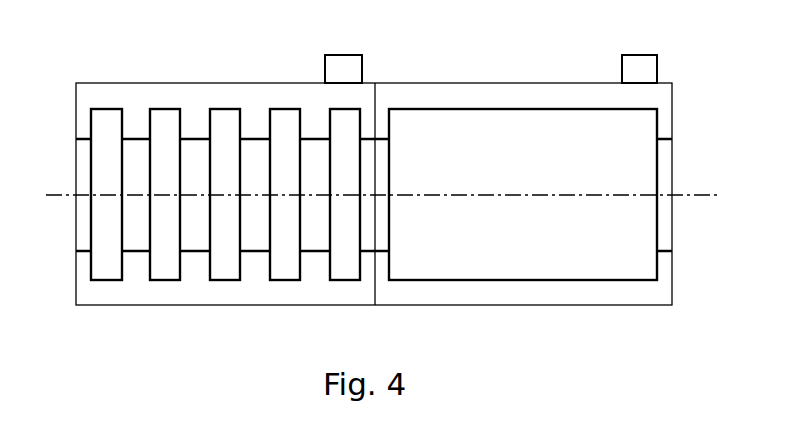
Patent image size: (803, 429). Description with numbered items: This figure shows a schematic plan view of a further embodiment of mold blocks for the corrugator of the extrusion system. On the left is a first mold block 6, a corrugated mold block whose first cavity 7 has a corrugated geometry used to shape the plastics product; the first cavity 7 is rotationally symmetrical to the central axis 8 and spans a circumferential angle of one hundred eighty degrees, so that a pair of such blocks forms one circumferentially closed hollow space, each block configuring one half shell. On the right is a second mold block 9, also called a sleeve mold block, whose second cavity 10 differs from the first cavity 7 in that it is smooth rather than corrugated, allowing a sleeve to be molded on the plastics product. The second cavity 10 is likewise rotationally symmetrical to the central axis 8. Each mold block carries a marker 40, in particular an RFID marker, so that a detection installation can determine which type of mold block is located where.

The first mold block 6 is at (194, 147).
The first cavity 7 is at (98, 217).
The central axis 8 is at (697, 193).
The second mold block 9 is at (561, 147).
The second cavity 10 is at (643, 237).
The marker 40 is at (363, 70).